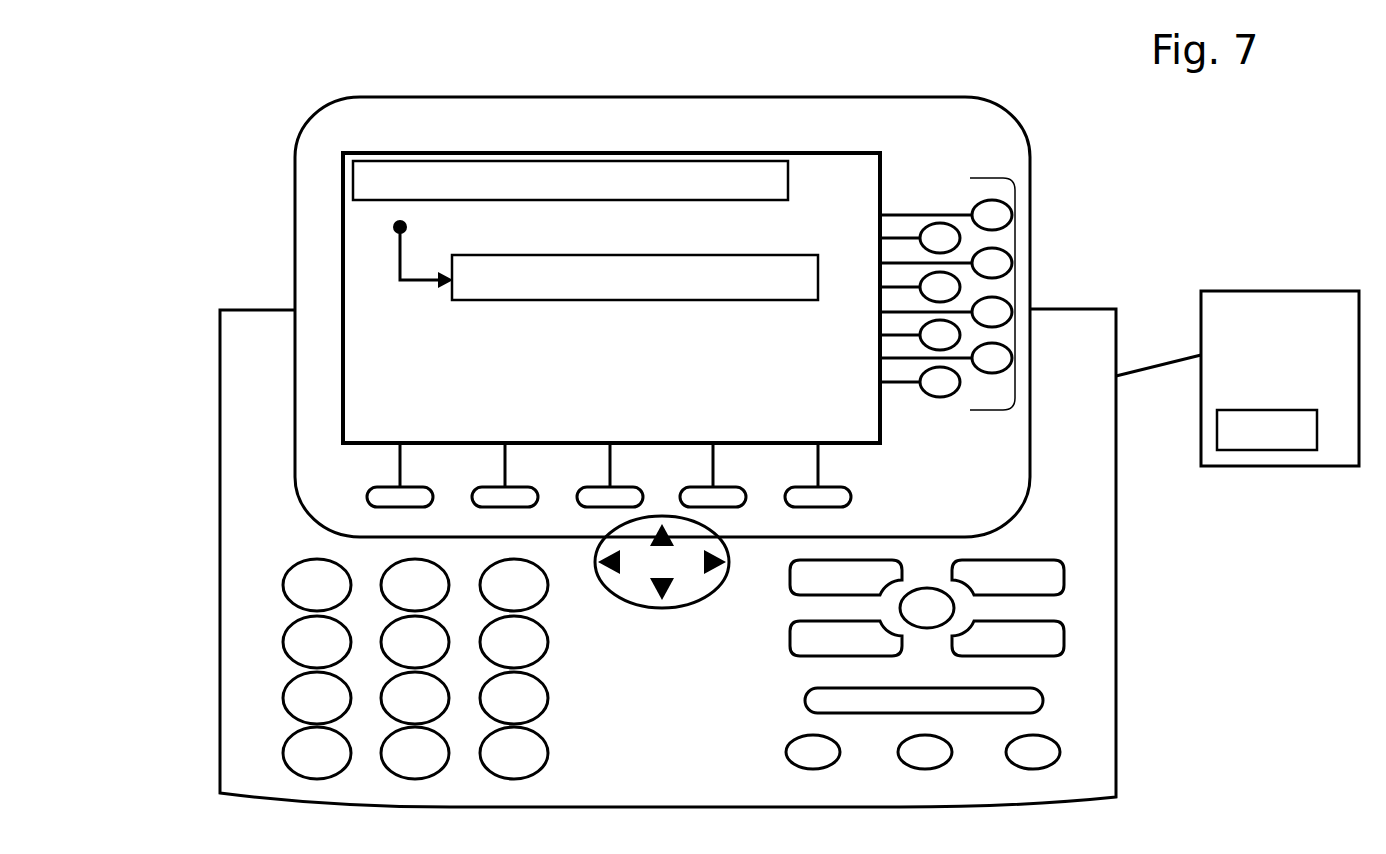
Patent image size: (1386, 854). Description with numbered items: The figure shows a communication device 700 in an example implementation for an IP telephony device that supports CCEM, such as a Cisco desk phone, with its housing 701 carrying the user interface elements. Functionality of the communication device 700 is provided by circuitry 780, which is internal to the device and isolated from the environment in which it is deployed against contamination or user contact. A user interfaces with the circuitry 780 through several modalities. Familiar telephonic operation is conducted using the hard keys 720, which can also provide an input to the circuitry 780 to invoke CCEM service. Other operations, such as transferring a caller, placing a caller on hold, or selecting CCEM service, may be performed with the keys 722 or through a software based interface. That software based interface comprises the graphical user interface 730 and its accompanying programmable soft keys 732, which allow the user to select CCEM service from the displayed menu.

The communication device 700 is at (1088, 156).
The housing 701 is at (216, 386).
The graphical user interface 730 is at (611, 280).
The soft keys 732 is at (1024, 275).
The hard keys 720 is at (272, 748).
The keys 722 is at (1070, 583).
The circuitry 780 is at (1225, 287).